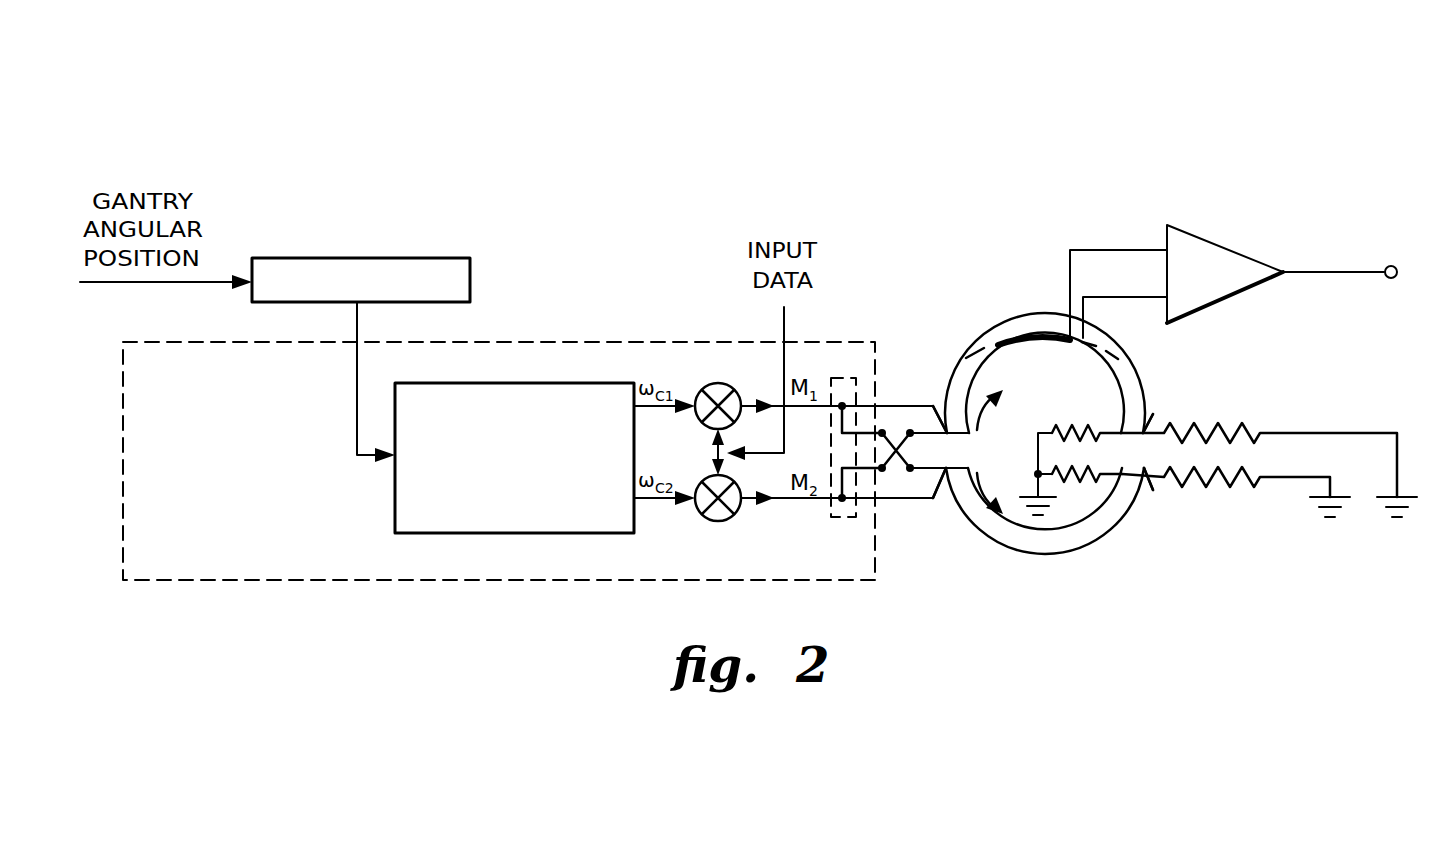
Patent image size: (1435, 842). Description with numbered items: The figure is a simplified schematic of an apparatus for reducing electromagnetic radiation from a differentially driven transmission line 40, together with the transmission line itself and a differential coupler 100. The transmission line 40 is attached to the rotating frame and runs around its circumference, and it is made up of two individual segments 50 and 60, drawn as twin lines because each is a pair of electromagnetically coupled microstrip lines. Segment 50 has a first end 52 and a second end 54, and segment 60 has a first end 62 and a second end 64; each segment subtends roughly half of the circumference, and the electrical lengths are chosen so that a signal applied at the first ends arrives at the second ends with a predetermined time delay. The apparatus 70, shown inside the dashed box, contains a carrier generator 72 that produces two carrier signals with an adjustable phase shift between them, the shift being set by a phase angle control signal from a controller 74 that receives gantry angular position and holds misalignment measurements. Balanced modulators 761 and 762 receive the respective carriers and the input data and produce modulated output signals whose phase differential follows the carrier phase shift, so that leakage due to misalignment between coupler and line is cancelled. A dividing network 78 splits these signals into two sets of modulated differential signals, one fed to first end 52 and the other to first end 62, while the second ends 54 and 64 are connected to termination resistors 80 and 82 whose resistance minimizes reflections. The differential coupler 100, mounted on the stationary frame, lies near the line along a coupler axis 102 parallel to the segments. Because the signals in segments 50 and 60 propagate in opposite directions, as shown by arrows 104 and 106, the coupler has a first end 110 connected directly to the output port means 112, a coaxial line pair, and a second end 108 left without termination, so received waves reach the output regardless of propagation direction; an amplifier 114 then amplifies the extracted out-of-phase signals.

The differentially driven transmission line 40 is at (1026, 448).
The individual segment 50 is at (966, 350).
The first end 52 is at (933, 403).
The second end 54 is at (1143, 436).
The individual segment 60 is at (1031, 568).
The first end 62 is at (934, 503).
The second end 64 is at (1142, 486).
The apparatus 70 is at (655, 342).
The carrier generator 72 is at (556, 383).
The controller 74 is at (470, 281).
The balanced modulator 761 is at (724, 383).
The balanced modulator 762 is at (716, 524).
The dividing network 78 is at (836, 376).
The termination resistors 80 is at (1190, 440).
The termination resistors 82 is at (1242, 482).
The differential coupler 100 is at (1037, 308).
The coupler axis 102 is at (1098, 349).
The arrow 104 is at (1003, 418).
The arrow 106 is at (995, 480).
The second end 108 is at (1000, 341).
The first end 110 is at (1068, 337).
The output port means 112 is at (1086, 332).
The amplifier 114 is at (1238, 250).